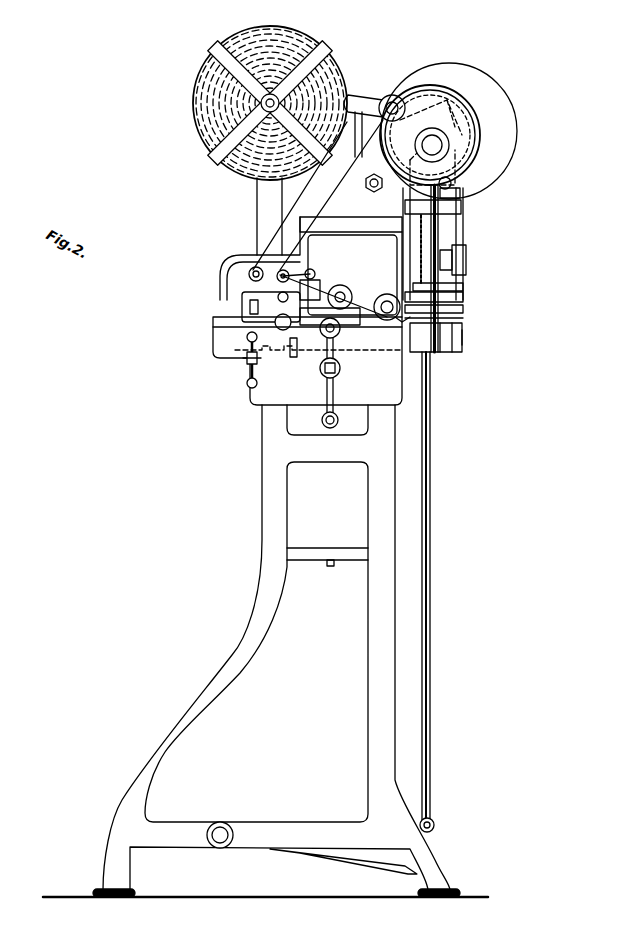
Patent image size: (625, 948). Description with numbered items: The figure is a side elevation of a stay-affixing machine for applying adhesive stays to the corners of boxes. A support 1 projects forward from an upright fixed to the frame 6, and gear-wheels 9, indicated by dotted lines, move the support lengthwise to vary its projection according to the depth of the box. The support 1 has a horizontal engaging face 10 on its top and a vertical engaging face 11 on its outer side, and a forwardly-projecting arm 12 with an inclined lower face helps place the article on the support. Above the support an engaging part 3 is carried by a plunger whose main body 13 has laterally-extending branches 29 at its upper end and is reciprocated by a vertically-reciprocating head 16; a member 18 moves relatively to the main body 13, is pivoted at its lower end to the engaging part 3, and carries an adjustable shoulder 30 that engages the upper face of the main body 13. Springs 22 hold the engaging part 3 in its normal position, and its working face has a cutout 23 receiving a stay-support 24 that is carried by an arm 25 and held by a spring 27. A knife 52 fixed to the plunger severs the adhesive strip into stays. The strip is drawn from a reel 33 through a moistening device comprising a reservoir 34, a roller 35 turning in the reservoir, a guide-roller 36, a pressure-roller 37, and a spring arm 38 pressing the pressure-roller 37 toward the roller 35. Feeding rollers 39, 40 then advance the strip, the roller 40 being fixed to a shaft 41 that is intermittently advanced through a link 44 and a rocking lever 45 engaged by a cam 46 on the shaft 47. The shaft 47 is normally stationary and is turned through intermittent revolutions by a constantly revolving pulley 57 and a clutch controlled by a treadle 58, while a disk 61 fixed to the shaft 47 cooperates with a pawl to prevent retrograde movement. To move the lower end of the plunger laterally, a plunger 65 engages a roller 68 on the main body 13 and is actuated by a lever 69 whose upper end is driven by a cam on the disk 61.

The support 1 is at (450, 340).
The engaging part 3 is at (460, 327).
The frame 6 is at (320, 428).
The gear-wheels 9 is at (240, 360).
The engaging face 10 is at (453, 345).
The engaging face 11 is at (462, 348).
The forwardly-projecting arm 12 is at (399, 368).
The main body 13 is at (440, 233).
The vertically-reciprocating head 16 is at (458, 192).
The member 18 is at (455, 305).
The spring 22 is at (410, 270).
The cutout 23 is at (460, 317).
The stay-support 24 is at (431, 333).
The arm 25 is at (441, 342).
The spring 27 is at (450, 286).
The laterally-extending branch 29 is at (452, 220).
The adjustable shoulder 30 is at (452, 201).
The reel 33 is at (252, 157).
The fluid-containing reservoir 34 is at (262, 303).
The roller 35 is at (314, 284).
The guide-roller 36 is at (249, 275).
The pressure-roller 37 is at (289, 273).
The spring arm 38 is at (312, 277).
The roller 39 is at (397, 320).
The roller 40 is at (382, 317).
The shaft 41 is at (387, 301).
The link 44 is at (388, 120).
The rocking lever 45 is at (400, 107).
The cam 46 is at (455, 118).
The shaft 47 is at (440, 145).
The knife 52 is at (401, 324).
The pulley 57 is at (432, 68).
The treadle 58 is at (392, 861).
The disk 61 is at (473, 130).
The plunger 65 is at (466, 270).
The roller 68 is at (467, 258).
The lever 69 is at (452, 182).